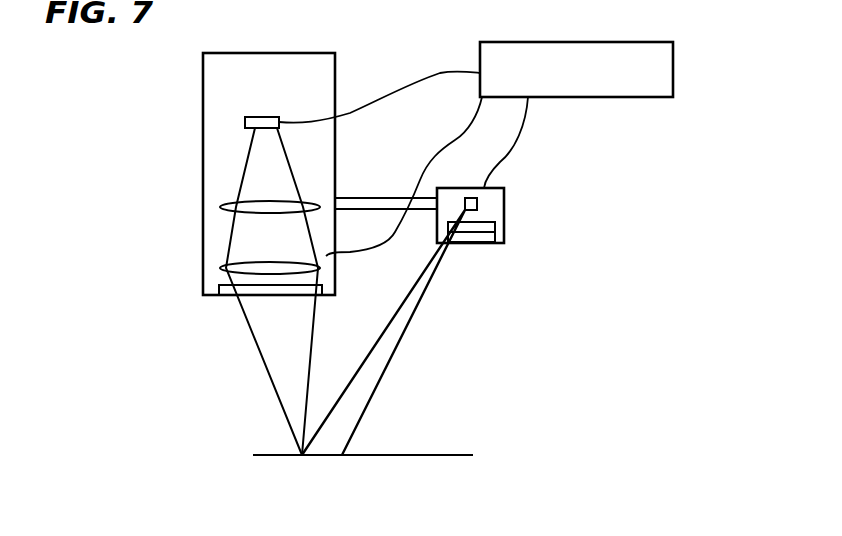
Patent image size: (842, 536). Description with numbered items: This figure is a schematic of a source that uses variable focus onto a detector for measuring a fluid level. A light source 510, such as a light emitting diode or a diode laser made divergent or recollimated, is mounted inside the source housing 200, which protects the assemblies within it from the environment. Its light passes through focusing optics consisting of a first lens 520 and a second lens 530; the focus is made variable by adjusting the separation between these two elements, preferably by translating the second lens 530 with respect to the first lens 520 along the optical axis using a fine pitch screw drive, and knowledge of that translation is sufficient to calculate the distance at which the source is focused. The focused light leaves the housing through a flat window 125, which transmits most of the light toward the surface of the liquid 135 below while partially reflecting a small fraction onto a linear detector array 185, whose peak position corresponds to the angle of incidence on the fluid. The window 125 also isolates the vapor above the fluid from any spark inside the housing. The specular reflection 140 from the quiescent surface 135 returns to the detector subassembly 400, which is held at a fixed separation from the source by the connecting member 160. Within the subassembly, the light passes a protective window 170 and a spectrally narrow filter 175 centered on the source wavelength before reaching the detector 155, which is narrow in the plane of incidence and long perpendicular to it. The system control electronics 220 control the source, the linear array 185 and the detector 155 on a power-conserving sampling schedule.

The source housing 200 is at (285, 53).
The light source 510 is at (288, 92).
The first lens 520 is at (218, 198).
The second lens 530 is at (216, 268).
The window 125 is at (238, 300).
The member 160 is at (391, 172).
The system control electronics 220 is at (590, 97).
The linear detector array 185 is at (326, 258).
The detector subassembly 400 is at (506, 187).
The detector 155 is at (468, 197).
The spectrally narrow filter 175 is at (505, 224).
The window 170 is at (505, 234).
The specular reflection 140 is at (388, 353).
The surface of the liquid 135 is at (442, 452).